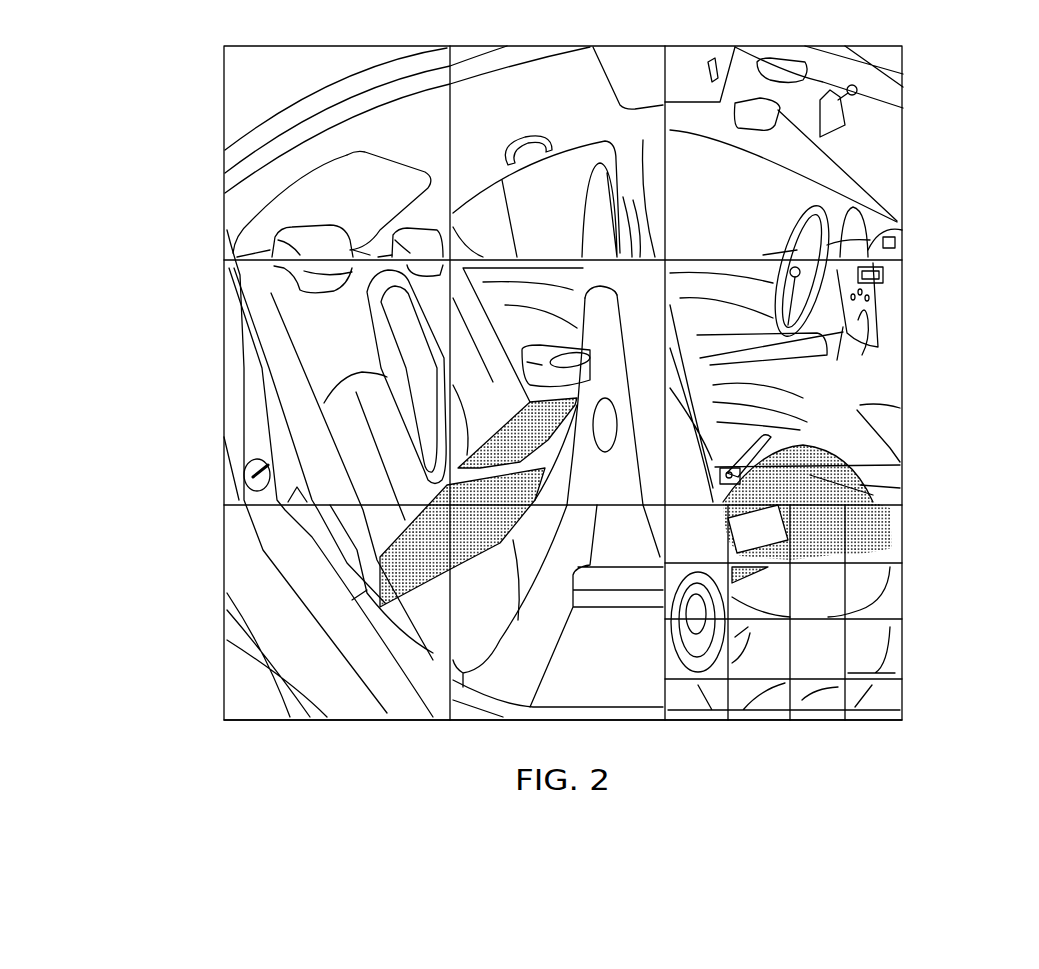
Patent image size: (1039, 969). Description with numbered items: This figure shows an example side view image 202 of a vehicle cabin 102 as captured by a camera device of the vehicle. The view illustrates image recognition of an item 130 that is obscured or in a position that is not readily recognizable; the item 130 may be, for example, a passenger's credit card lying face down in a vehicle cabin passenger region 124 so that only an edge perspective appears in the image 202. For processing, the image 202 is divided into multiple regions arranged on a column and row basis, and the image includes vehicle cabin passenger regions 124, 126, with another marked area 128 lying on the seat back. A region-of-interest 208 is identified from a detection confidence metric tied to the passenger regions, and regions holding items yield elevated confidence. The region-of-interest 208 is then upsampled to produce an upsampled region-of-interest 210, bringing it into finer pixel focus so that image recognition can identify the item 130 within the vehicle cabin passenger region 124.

The side view image 202 is at (157, 93).
The vehicle cabin 102 is at (878, 163).
The vehicle cabin passenger region 124 is at (930, 540).
The sampled region / seat back portion 128 is at (512, 437).
The vehicle cabin passenger region 126 is at (478, 538).
The item 130 is at (790, 471).
The region-of-interest 208 is at (210, 505).
The upsampled region-of-interest 210 is at (902, 727).